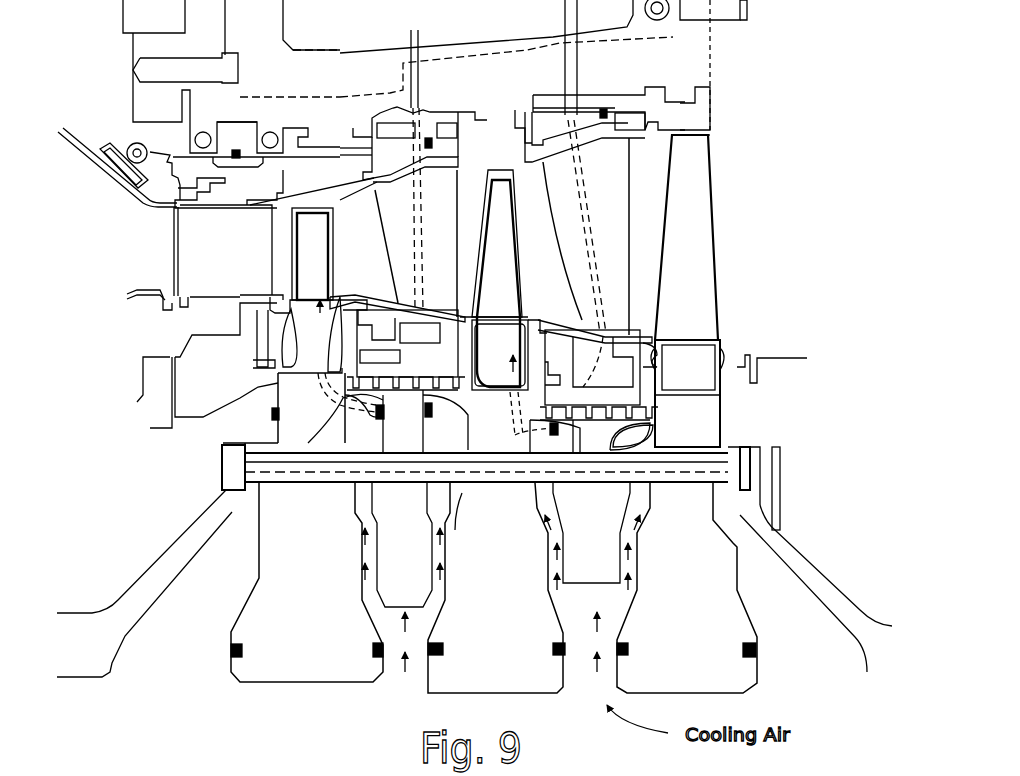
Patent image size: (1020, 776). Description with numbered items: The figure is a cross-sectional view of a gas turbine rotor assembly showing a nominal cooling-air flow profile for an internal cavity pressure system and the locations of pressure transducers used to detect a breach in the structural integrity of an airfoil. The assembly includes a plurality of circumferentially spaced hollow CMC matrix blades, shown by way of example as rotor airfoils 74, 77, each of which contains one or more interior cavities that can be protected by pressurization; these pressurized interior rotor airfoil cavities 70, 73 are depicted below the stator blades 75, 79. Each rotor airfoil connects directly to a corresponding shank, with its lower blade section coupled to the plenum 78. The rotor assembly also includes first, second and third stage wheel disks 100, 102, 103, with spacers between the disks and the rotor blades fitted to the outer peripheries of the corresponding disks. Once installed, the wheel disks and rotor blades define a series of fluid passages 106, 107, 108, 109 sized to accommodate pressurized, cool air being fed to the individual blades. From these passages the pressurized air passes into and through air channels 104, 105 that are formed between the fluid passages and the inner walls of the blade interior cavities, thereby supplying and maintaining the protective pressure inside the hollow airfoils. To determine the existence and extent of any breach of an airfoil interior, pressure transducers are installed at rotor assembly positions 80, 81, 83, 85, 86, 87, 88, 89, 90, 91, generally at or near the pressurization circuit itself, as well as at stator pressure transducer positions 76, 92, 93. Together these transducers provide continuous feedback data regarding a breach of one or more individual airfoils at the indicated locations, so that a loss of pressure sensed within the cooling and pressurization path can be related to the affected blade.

The pressurized interior rotor airfoil cavity 70 is at (307, 262).
The pressurized interior rotor airfoil cavity 73 is at (498, 205).
The rotor airfoil 74 is at (525, 289).
The stator blade 75 is at (405, 263).
The stator pressure transducer position 76 is at (236, 150).
The rotor airfoil 77 is at (340, 268).
The plenum 78 is at (262, 490).
The stator blade 79 is at (618, 197).
The rotor assembly pressure transducer position 80 is at (270, 413).
The rotor assembly pressure transducer position 81 is at (377, 413).
The rotor assembly pressure transducer position 83 is at (430, 412).
The rotor assembly pressure transducer position 85 is at (558, 430).
The rotor assembly pressure transducer position 86 is at (243, 648).
The rotor assembly pressure transducer position 87 is at (372, 649).
The rotor assembly pressure transducer position 88 is at (445, 648).
The rotor assembly pressure transducer position 89 is at (553, 649).
The rotor assembly pressure transducer position 90 is at (628, 648).
The rotor assembly pressure transducer position 91 is at (743, 648).
The stator pressure transducer position 92 is at (604, 109).
The stator pressure transducer position 93 is at (429, 138).
The first stage wheel disk 100 is at (328, 571).
The second stage wheel disk 102 is at (517, 585).
The third stage wheel disk 103 is at (700, 585).
The air channel 104 is at (330, 405).
The air channel 105 is at (522, 425).
The fluid passage 106 is at (372, 558).
The fluid passage 107 is at (445, 557).
The fluid passage 108 is at (560, 557).
The fluid passage 109 is at (632, 557).